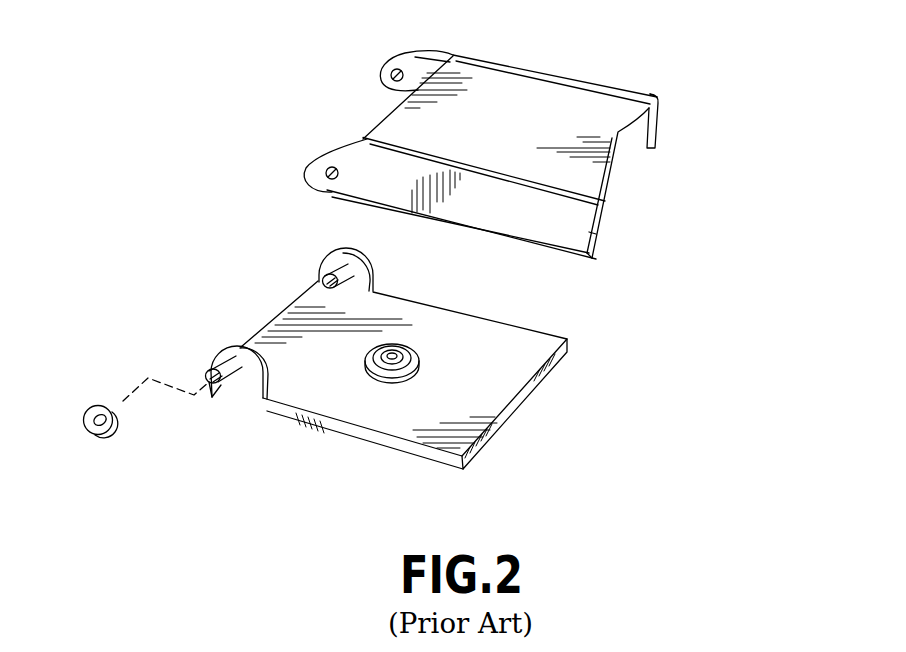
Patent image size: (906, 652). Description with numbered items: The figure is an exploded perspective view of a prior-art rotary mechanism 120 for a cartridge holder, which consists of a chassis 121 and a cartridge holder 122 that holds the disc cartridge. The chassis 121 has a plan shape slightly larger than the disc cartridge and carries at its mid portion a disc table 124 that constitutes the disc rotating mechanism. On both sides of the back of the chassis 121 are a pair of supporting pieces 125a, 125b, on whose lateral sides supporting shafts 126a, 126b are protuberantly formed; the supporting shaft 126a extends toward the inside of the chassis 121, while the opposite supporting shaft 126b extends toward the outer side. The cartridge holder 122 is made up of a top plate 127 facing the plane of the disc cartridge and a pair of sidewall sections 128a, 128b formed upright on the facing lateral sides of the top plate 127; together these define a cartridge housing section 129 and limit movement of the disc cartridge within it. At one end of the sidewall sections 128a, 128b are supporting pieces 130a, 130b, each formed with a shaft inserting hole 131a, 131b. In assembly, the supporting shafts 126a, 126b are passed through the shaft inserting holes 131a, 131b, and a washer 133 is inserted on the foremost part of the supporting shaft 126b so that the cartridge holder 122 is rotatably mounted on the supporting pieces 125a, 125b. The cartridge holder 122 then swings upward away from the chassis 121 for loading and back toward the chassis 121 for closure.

The rotary mechanism 120 is at (751, 58).
The chassis 121 is at (363, 353).
The cartridge holder 122 is at (490, 136).
The disc table 124 is at (434, 363).
The supporting piece 125a is at (397, 269).
The supporting piece 125b is at (260, 416).
The supporting shaft 126a is at (273, 243).
The supporting shaft 126b is at (201, 406).
The top plate 127 is at (532, 101).
The sidewall section 128a is at (706, 121).
The sidewall section 128b is at (647, 245).
The cartridge housing section 129 is at (659, 183).
The supporting piece 130a is at (421, 51).
The supporting piece 130b is at (291, 152).
The shaft inserting hole 131a is at (363, 53).
The shaft inserting hole 131b is at (301, 118).
The washer 133 is at (146, 438).